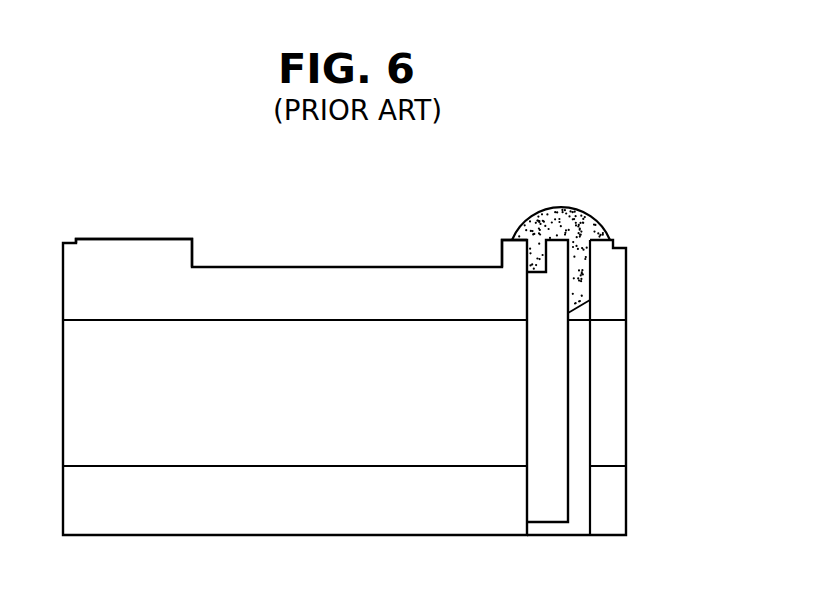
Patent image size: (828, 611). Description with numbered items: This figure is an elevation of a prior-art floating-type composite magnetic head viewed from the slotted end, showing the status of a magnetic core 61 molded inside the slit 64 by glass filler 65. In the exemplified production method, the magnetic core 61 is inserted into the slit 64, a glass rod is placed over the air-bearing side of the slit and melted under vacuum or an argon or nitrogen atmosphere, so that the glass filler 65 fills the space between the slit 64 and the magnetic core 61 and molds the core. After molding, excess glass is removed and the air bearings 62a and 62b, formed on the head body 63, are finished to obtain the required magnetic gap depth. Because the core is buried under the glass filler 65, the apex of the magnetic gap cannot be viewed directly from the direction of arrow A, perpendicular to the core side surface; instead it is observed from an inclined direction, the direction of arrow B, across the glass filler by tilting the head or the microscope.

The magnetic core 61 is at (543, 507).
The air bearing 62a is at (515, 260).
The air bearing 62b is at (167, 250).
The insulating substrate 63 is at (337, 280).
The slit 64 is at (580, 515).
The glass filler 65 is at (565, 212).
The direction of arrow A is at (640, 248).
The direction of arrow B is at (617, 200).